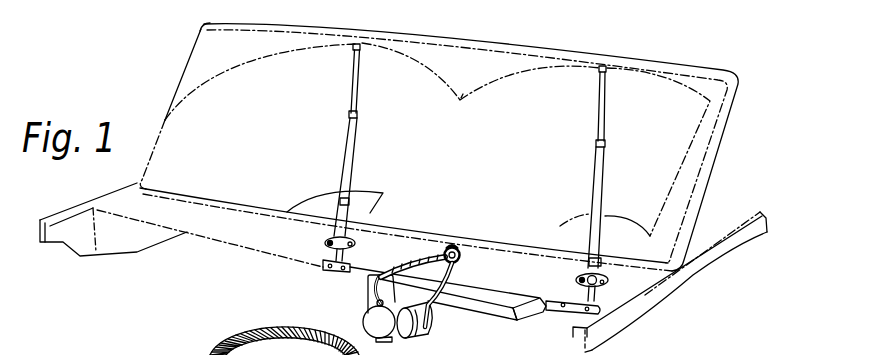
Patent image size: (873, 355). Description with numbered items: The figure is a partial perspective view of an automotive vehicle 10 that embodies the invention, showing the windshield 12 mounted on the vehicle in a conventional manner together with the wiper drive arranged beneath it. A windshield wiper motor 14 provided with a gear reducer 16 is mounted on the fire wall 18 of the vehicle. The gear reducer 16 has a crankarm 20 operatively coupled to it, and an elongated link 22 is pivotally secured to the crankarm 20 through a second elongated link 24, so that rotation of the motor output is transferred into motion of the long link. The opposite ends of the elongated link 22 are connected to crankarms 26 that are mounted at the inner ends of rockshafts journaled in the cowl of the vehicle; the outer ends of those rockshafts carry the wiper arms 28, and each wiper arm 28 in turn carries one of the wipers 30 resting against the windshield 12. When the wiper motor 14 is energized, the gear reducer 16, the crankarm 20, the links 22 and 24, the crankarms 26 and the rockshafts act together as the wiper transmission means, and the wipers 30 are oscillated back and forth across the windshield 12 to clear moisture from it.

The automotive vehicle 10 is at (748, 261).
The windshield 12 is at (488, 141).
The windshield wiper motor 14 is at (370, 289).
The gear reducer 16 is at (363, 323).
The fire wall 18 is at (131, 247).
The crankarm 20 is at (430, 327).
The elongated link 22 is at (480, 292).
The second elongated link 24 is at (512, 314).
The crankarms 26 is at (333, 261).
The wiper arms 28 is at (345, 199).
The wipers 30 is at (354, 82).